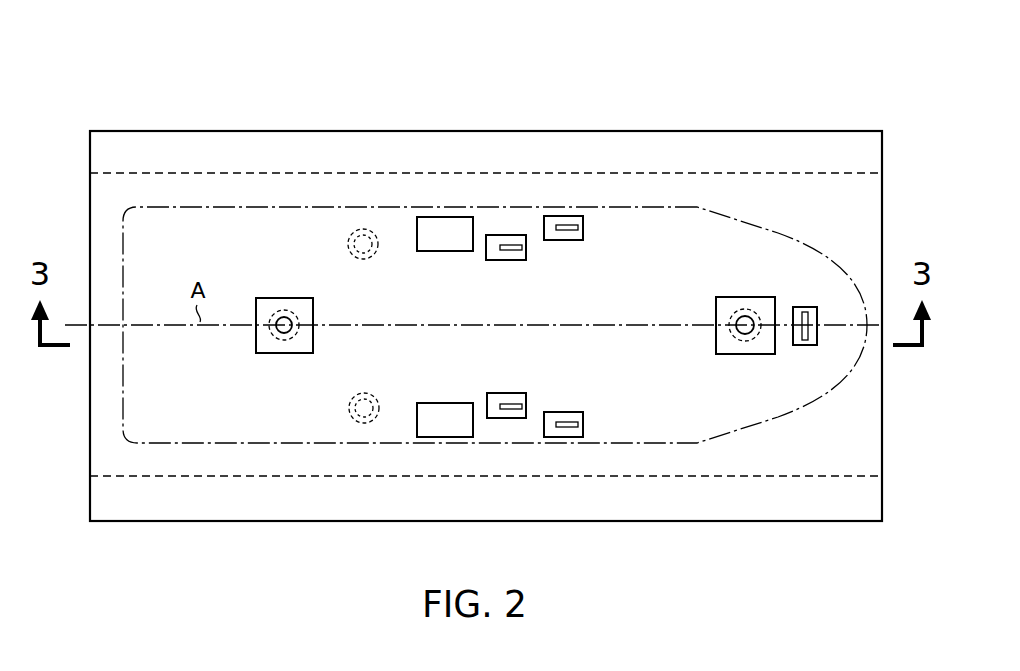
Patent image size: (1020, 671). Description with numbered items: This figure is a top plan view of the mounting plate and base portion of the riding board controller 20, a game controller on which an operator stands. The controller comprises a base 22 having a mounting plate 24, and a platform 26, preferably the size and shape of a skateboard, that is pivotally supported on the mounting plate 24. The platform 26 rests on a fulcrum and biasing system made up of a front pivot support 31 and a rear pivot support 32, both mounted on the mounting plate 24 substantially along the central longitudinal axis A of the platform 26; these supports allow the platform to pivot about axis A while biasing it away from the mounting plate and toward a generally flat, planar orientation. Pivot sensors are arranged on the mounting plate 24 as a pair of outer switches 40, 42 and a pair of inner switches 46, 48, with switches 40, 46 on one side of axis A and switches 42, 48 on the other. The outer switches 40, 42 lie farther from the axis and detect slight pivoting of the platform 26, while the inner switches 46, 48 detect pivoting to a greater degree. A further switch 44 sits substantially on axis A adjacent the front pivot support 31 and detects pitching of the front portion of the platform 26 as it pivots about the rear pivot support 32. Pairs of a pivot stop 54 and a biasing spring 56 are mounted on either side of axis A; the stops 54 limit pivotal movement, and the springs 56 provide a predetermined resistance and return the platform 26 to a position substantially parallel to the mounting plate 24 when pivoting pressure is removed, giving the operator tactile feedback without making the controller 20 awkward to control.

The riding board controller 20 is at (684, 68).
The base 22 is at (132, 521).
The mounting plate 24 is at (278, 131).
The platform 26 is at (258, 443).
The front pivot support 31 is at (732, 335).
The rear pivot support 32 is at (272, 334).
The outer switch 40 is at (555, 240).
The outer switch 42 is at (557, 412).
The switch 44 is at (793, 307).
The inner switch 46 is at (498, 260).
The inner switch 48 is at (490, 393).
The pivot stop 54 is at (421, 250).
The biasing spring 56 is at (348, 244).